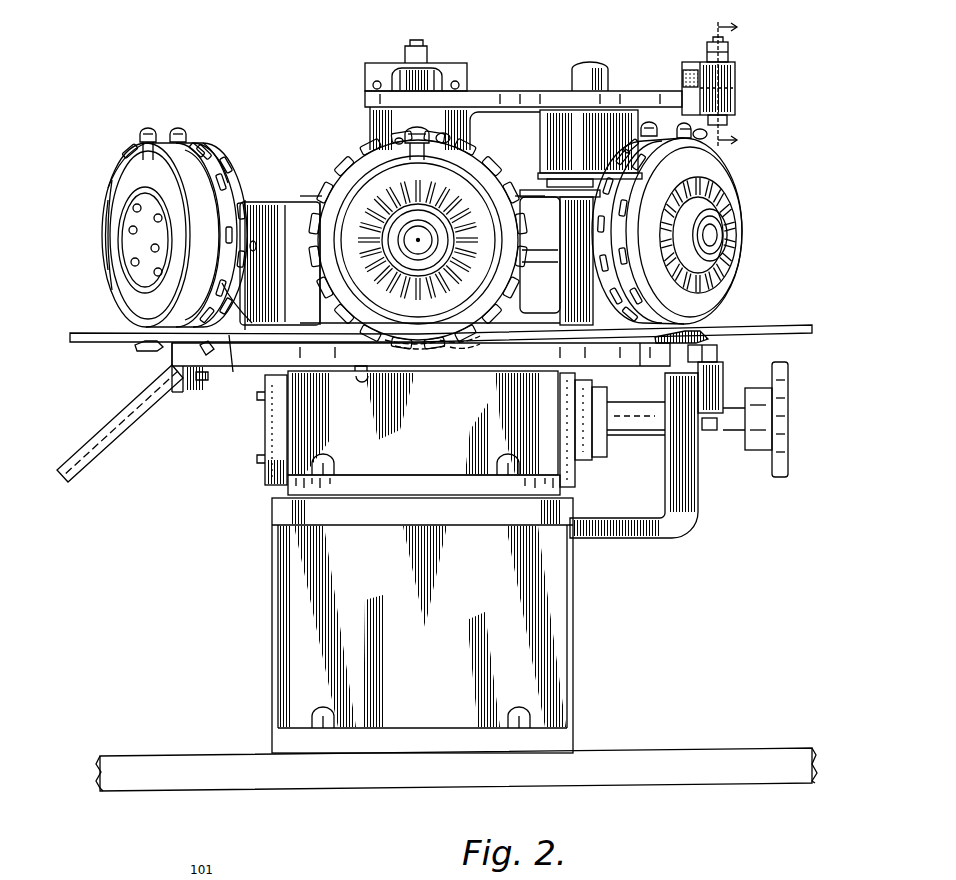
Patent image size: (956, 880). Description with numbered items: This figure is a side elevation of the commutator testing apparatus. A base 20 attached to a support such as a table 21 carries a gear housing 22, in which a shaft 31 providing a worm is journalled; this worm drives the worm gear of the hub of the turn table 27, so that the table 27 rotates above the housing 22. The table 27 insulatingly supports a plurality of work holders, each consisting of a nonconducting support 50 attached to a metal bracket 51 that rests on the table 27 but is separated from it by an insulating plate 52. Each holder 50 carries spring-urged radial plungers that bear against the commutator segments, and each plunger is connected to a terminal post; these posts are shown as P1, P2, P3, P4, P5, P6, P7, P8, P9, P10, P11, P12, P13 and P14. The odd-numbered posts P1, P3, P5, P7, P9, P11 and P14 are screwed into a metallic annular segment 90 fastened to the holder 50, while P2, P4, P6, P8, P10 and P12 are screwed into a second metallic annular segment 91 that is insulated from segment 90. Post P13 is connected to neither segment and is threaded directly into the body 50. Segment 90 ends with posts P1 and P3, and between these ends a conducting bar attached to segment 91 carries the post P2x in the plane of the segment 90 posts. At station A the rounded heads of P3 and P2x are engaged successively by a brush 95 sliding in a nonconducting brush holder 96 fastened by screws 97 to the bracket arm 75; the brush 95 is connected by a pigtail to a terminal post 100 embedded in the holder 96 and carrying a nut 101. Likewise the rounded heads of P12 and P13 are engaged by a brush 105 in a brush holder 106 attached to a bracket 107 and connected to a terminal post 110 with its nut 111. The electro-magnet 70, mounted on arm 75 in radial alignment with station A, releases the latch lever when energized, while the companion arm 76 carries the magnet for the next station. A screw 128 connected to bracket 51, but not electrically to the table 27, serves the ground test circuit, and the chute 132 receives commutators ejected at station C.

The base 20 is at (574, 660).
The table 21 is at (615, 752).
The gear housing 22 is at (270, 482).
The turn table 27 is at (447, 374).
The shaft 31 is at (636, 416).
The nonconducting support 50 is at (237, 192).
The metal bracket 51 is at (292, 336).
The insulating plate 52 is at (511, 340).
The electro-magnet 70 is at (540, 140).
The arm 75 is at (638, 82).
The arm 76 is at (460, 63).
The metallic annular segment 90 is at (638, 180).
The metallic annular segment 91 is at (213, 168).
The brush 95 is at (729, 127).
The brush holder 96 is at (736, 102).
The screws 97 is at (735, 76).
The terminal post 100 is at (715, 38).
The nut 101 is at (707, 50).
The brush 105 is at (720, 352).
The brush holder 106 is at (716, 384).
The bracket 107 is at (670, 456).
The terminal post 110 is at (707, 438).
The nut 111 is at (716, 426).
The screw 128 is at (203, 384).
The chute 132 is at (112, 429).
The terminal post P1 is at (126, 146).
The terminal post P2 is at (190, 136).
The post P2x is at (148, 132).
The terminal post P3 is at (172, 133).
The terminal post P4 is at (206, 152).
The terminal post P5 is at (188, 171).
The terminal post P6 is at (250, 204).
The terminal post P7 is at (207, 218).
The terminal post P8 is at (235, 249).
The terminal post P9 is at (216, 278).
The terminal post P10 is at (232, 375).
The terminal post P11 is at (188, 325).
The terminal post P12 is at (196, 368).
The terminal post P13 is at (167, 354).
The terminal post P14 is at (170, 349).
The station C is at (145, 230).
The station A is at (699, 202).